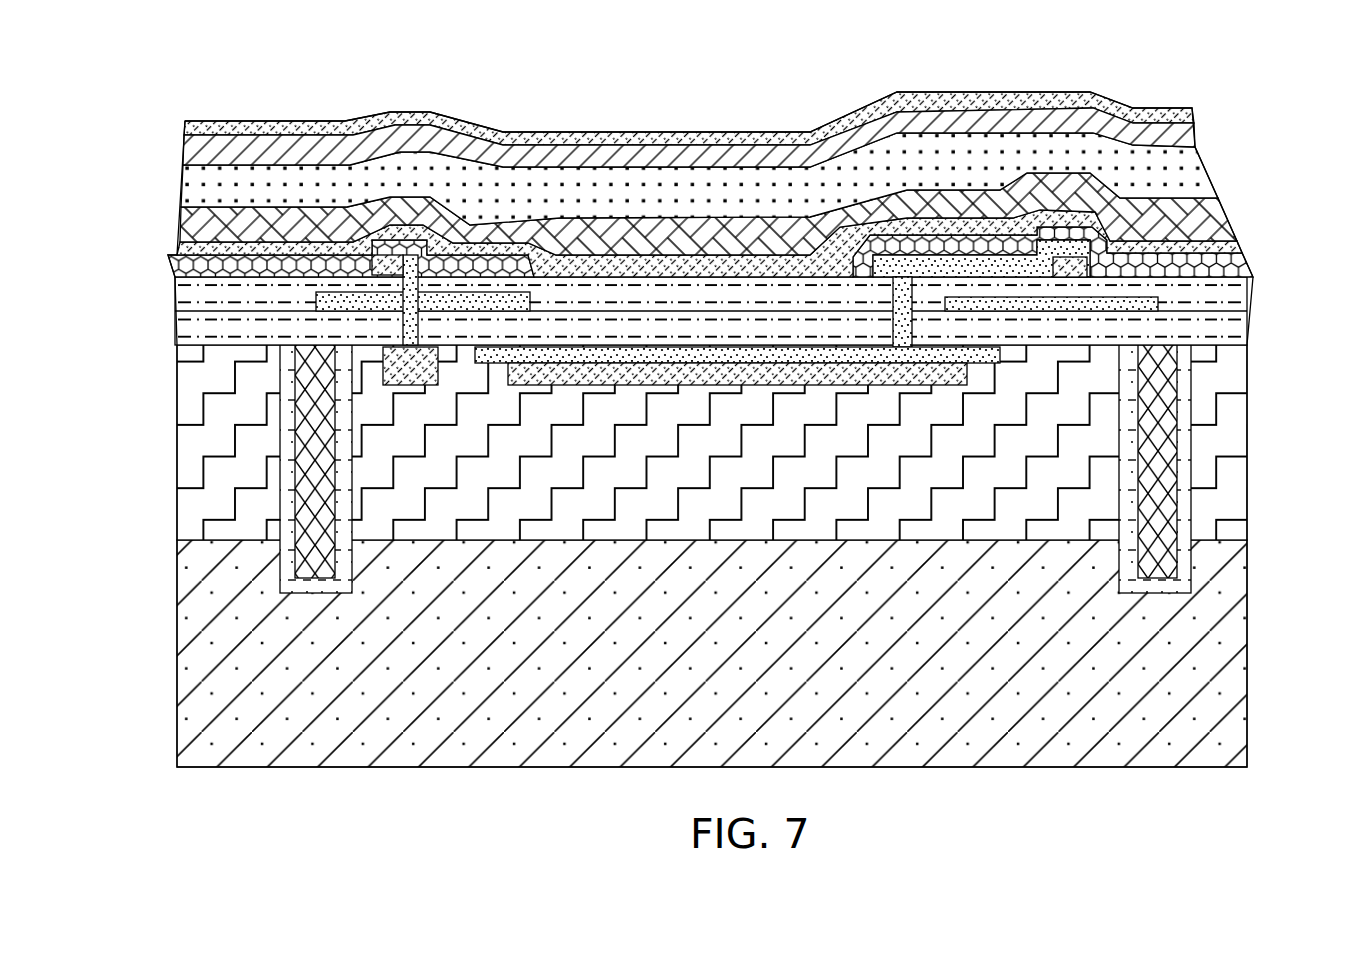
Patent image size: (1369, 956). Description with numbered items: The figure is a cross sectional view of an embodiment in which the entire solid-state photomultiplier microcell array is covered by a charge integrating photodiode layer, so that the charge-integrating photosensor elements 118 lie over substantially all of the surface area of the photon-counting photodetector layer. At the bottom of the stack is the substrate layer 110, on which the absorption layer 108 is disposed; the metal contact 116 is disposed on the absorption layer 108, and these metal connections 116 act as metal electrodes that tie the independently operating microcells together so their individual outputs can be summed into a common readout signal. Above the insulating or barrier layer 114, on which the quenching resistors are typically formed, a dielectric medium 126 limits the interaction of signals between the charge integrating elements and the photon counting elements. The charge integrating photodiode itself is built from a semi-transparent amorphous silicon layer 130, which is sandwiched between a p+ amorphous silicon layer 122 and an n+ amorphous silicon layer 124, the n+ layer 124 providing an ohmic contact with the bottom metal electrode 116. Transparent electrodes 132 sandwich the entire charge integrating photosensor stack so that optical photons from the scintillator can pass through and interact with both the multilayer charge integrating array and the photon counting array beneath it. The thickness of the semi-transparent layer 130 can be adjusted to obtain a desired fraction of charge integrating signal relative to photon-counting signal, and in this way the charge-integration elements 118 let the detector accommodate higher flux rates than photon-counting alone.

The charge-integrating photosensor elements 118 is at (130, 127).
The transparent electrodes 132 is at (1010, 93).
The 'p+' amorphous silicon layer 122 is at (1195, 131).
The semi-transparent amorphous silicon layer 130 is at (1208, 177).
The 'n+' amorphous silicon layer 124 is at (1237, 221).
The dielectric medium 126 is at (1253, 273).
The insulating layer 114 is at (1240, 307).
The metal connections 116 is at (1125, 312).
The absorption layer 108 is at (1055, 470).
The substrate layer 110 is at (1242, 632).